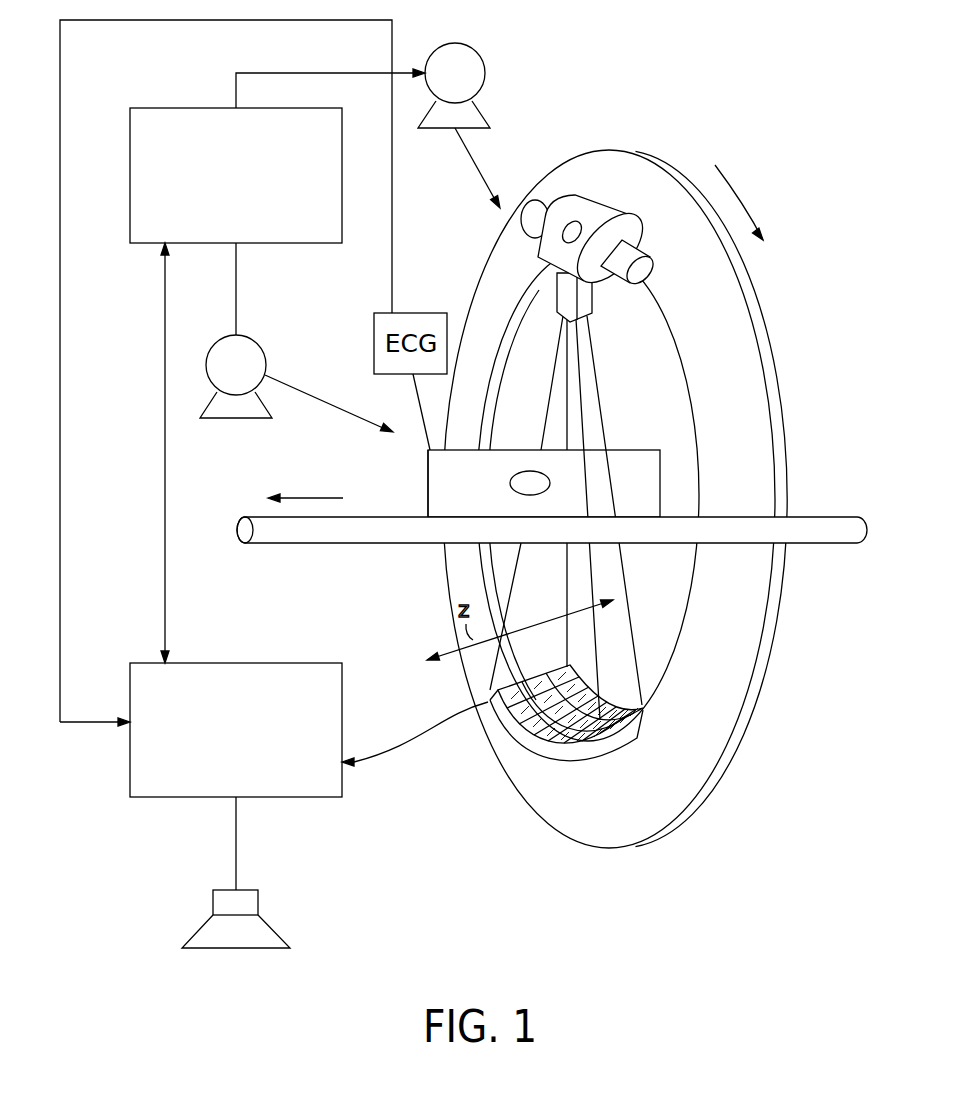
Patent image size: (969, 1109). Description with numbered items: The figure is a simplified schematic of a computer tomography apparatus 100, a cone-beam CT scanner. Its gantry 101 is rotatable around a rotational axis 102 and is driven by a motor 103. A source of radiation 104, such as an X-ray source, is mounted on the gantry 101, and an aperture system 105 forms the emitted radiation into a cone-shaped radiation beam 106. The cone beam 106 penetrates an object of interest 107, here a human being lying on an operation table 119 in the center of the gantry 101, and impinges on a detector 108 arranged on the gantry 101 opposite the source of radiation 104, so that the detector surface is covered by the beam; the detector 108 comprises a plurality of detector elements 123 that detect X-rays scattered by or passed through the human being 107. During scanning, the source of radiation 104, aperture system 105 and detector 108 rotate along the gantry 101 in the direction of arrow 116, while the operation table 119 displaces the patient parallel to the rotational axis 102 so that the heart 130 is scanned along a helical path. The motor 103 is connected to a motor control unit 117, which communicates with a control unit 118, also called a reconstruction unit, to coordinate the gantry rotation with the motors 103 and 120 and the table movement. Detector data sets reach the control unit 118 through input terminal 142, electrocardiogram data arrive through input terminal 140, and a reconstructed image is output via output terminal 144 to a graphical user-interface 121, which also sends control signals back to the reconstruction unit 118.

The computer tomography apparatus 100 is at (722, 75).
The gantry 101 is at (748, 648).
The rotational axis 102 is at (316, 498).
The motor 103 is at (487, 66).
The source of radiation 104 is at (599, 209).
The aperture system 105 is at (565, 296).
The cone-shaped radiation beam 106 is at (610, 410).
The object of interest 107 is at (428, 478).
The detector 108 is at (560, 725).
The arrow 116 is at (745, 193).
The motor control unit 117 is at (177, 107).
The control unit 118 is at (262, 663).
The operation table 119 is at (838, 517).
The motor 120 is at (268, 362).
The graphical user-interface 121 is at (233, 950).
The detector elements 123 is at (535, 685).
The heart 130 is at (548, 480).
The input terminal 140 is at (117, 740).
The input terminal 142 is at (352, 777).
The output terminal 144 is at (233, 800).